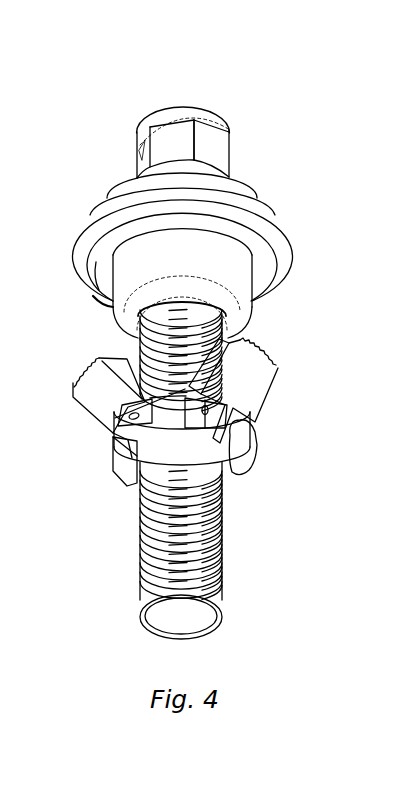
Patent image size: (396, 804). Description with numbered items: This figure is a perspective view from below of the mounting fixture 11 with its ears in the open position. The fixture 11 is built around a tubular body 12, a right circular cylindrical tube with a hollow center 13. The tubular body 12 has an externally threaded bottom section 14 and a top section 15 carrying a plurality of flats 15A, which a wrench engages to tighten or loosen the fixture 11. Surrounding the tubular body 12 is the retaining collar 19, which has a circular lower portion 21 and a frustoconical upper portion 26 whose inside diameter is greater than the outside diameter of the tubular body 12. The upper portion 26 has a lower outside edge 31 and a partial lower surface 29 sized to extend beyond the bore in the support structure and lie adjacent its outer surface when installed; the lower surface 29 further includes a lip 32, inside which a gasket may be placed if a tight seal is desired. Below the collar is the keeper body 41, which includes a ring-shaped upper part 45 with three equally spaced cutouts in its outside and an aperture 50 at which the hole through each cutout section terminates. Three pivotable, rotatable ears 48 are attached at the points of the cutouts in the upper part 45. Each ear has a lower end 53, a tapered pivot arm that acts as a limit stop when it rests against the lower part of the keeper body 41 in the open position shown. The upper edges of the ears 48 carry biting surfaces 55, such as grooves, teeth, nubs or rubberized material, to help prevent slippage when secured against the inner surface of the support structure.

The mounting fixture 11 is at (218, 88).
The tubular body 12 is at (230, 177).
The hollow center 13 is at (182, 615).
The bottom section 14 is at (140, 578).
The top section 15 is at (230, 138).
The flats 15A is at (140, 152).
The retaining collar 19 is at (276, 214).
The lower portion 21 is at (246, 334).
The upper portion 26 is at (293, 241).
The lower surface 29 is at (99, 268).
The lower outside edge 31 is at (272, 288).
The lip 32 is at (270, 297).
The keeper body 41 is at (126, 482).
The upper part 45 is at (252, 453).
The ears 48 is at (270, 390).
The aperture 50 is at (113, 428).
The lower end 53 is at (240, 450).
The biting surfaces 55 is at (280, 363).